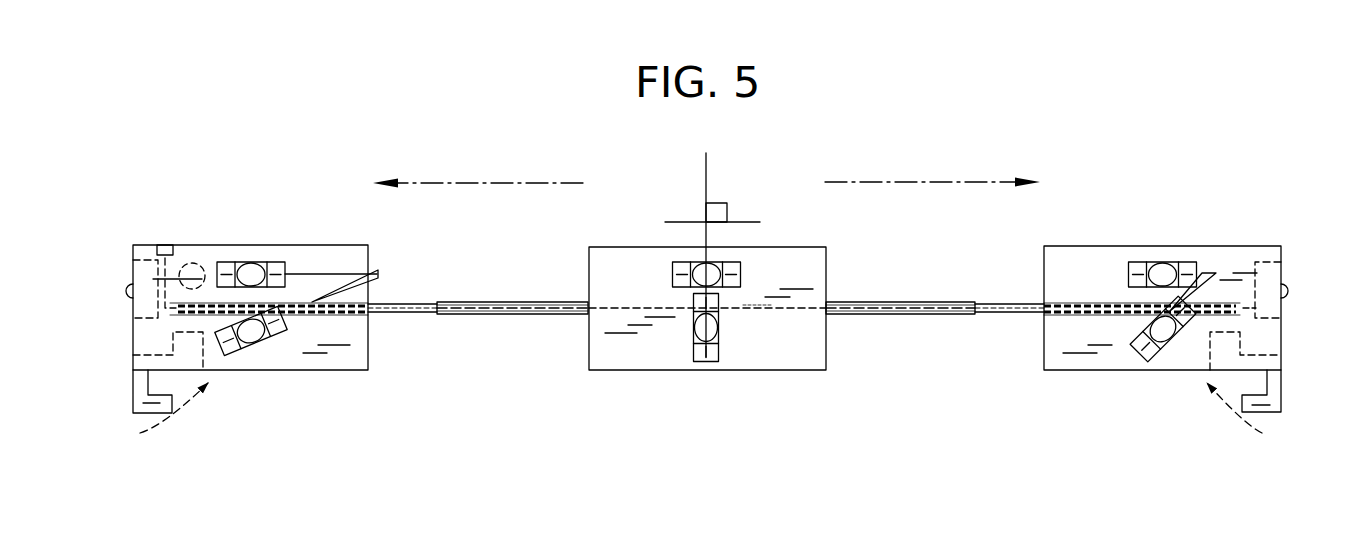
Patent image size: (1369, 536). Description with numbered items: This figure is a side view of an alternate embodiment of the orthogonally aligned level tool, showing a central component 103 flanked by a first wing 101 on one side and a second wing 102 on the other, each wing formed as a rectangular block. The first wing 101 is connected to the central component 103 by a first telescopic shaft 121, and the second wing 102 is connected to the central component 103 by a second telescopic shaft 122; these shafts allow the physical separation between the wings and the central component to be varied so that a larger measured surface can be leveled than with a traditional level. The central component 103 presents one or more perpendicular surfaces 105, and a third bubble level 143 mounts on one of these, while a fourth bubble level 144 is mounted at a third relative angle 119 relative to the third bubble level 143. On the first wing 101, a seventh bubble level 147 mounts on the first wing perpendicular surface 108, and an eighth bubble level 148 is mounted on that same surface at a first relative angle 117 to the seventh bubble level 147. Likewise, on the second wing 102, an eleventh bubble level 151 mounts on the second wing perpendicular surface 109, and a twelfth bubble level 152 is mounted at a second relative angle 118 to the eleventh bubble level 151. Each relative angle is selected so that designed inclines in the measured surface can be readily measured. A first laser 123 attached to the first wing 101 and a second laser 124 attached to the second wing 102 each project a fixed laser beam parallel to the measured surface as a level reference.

The first wing 101 is at (347, 370).
The second wing 102 is at (1093, 370).
The central component 103 is at (732, 372).
The perpendicular surfaces 105 is at (629, 362).
The first wing perpendicular surface 108 is at (308, 258).
The second wing perpendicular surface 109 is at (1085, 255).
The first relative angle 117 is at (364, 272).
The second relative angle 118 is at (1208, 275).
The third relative angle 119 is at (727, 203).
The first telescopic shaft 121 is at (483, 302).
The second telescopic shaft 122 is at (912, 302).
The first laser 123 is at (126, 290).
The second laser 124 is at (1289, 290).
The third bubble level 143 is at (672, 275).
The fourth bubble level 144 is at (697, 362).
The seventh bubble level 147 is at (241, 262).
The eighth bubble level 148 is at (265, 342).
The eleventh bubble level 151 is at (1150, 262).
The twelfth bubble level 152 is at (1157, 352).